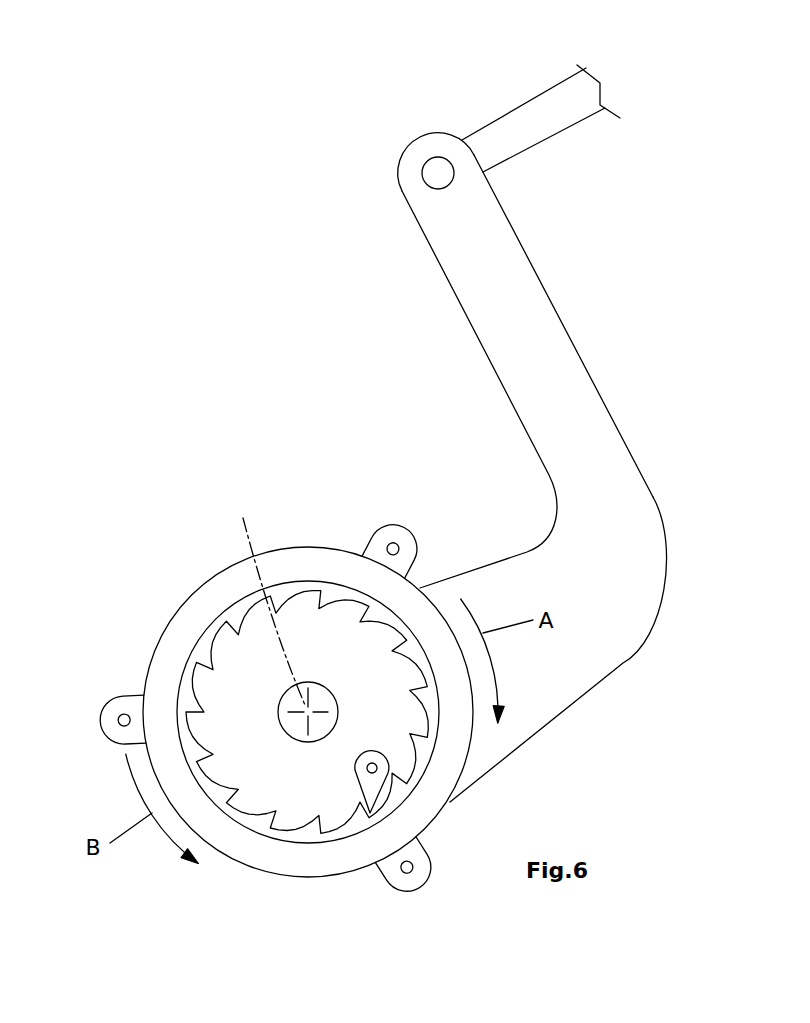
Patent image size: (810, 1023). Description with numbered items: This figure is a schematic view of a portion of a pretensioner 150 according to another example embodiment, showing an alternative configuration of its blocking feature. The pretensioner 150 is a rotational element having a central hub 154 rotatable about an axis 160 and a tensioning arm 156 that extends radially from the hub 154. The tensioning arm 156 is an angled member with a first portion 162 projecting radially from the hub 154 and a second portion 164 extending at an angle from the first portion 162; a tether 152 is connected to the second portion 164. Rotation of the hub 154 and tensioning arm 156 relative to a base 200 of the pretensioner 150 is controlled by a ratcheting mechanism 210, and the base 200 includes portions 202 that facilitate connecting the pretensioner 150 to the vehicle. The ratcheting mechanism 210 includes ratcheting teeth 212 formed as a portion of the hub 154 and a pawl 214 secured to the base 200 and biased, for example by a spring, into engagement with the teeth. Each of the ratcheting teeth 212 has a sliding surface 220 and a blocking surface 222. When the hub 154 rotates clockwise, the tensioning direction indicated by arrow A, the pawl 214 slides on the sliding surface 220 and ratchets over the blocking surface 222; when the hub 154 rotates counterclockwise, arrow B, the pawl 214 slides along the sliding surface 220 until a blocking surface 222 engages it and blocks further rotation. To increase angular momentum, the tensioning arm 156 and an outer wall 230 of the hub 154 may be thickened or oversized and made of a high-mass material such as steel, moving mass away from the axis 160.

The pretensioner 150 is at (275, 716).
The tether 152 is at (523, 133).
The hub 154 is at (298, 858).
The tensioning arm 156 is at (618, 533).
The axis 160 is at (271, 603).
The first portion 162 is at (572, 667).
The second portion 164 is at (510, 287).
The base 200 is at (315, 637).
The portions 202 is at (410, 543).
The ratcheting mechanism 210 is at (253, 713).
The ratcheting teeth 212 is at (257, 820).
The pawl 214 is at (373, 792).
The sliding surface 220 is at (292, 823).
The blocking surface 222 is at (330, 812).
The outer wall 230 is at (335, 862).